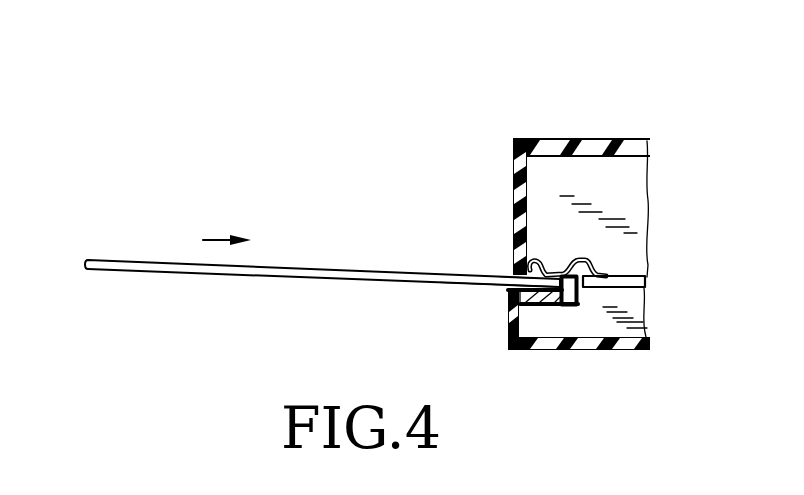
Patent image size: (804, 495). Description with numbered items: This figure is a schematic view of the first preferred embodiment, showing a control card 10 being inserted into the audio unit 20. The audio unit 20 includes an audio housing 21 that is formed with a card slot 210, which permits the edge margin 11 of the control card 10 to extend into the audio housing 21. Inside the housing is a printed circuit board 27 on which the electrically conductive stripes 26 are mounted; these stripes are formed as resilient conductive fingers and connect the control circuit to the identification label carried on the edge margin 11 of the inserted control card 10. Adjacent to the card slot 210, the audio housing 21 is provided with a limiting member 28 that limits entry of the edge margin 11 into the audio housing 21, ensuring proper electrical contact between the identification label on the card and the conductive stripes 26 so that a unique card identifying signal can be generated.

The control card 10 is at (372, 289).
The edge margin 11 is at (473, 285).
The audio unit 20 is at (589, 128).
The audio housing 21 is at (517, 139).
The electrically conductive stripes 26 is at (572, 260).
The printed circuit board 27 is at (607, 289).
The limiting member 28 is at (567, 306).
The card slot 210 is at (507, 274).